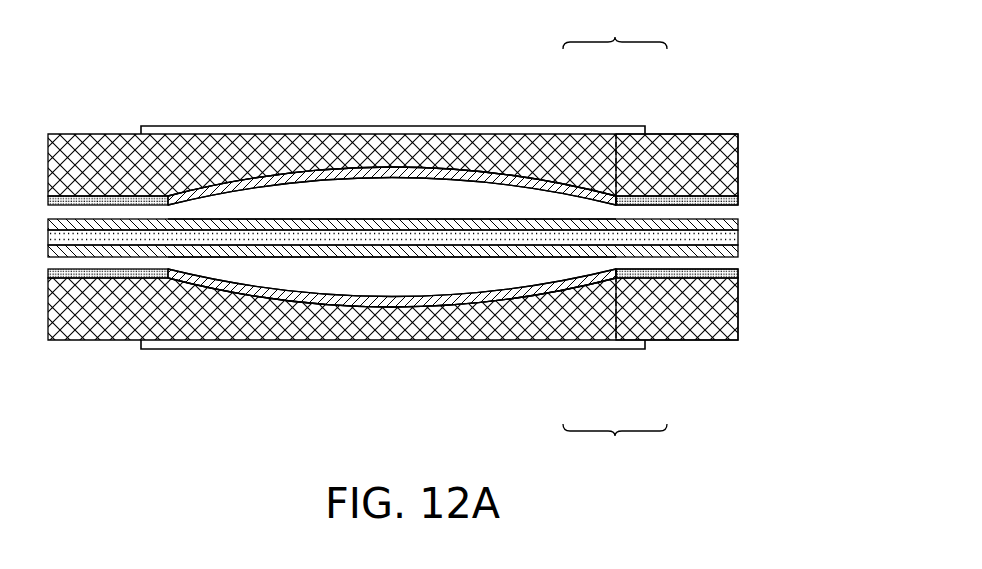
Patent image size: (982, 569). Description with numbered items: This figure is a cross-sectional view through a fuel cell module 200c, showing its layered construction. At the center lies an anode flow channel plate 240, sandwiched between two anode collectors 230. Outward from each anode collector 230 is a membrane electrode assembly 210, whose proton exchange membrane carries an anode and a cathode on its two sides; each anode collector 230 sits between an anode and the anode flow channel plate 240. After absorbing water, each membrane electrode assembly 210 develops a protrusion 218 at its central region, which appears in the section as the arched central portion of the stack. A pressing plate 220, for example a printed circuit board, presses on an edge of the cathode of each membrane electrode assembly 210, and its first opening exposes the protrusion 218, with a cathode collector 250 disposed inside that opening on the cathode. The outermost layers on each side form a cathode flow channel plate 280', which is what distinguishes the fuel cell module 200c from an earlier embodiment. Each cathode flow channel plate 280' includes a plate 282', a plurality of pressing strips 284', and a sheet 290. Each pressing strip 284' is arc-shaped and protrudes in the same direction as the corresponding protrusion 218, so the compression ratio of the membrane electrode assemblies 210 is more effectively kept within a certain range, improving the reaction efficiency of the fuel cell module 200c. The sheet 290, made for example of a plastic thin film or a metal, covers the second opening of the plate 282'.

The fuel cell module 200c is at (800, 430).
The membrane electrode assembly 210 is at (717, 211).
The protrusion 218 is at (453, 193).
The pressing plate 220 is at (739, 193).
The anode collector 230 is at (739, 220).
The anode flow channel plate 240 is at (713, 237).
The cathode collector 250 is at (365, 166).
The cathode flow channel plate 280' is at (615, 238).
The plate 282' is at (677, 240).
The pressing strip 284' is at (588, 240).
The sheet 290 is at (219, 134).